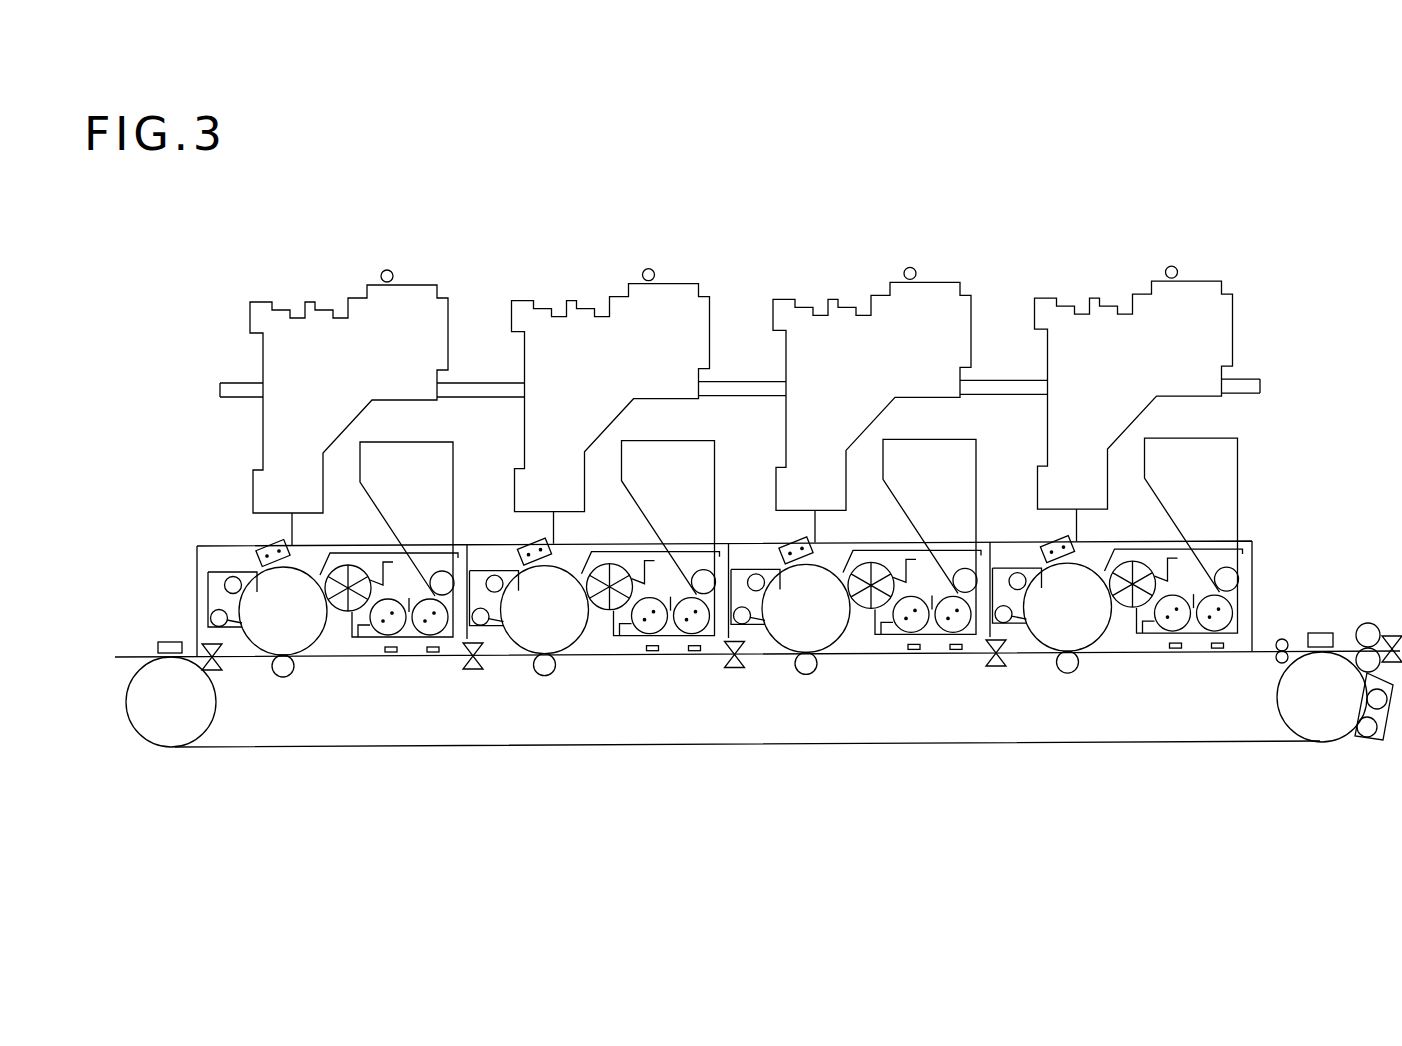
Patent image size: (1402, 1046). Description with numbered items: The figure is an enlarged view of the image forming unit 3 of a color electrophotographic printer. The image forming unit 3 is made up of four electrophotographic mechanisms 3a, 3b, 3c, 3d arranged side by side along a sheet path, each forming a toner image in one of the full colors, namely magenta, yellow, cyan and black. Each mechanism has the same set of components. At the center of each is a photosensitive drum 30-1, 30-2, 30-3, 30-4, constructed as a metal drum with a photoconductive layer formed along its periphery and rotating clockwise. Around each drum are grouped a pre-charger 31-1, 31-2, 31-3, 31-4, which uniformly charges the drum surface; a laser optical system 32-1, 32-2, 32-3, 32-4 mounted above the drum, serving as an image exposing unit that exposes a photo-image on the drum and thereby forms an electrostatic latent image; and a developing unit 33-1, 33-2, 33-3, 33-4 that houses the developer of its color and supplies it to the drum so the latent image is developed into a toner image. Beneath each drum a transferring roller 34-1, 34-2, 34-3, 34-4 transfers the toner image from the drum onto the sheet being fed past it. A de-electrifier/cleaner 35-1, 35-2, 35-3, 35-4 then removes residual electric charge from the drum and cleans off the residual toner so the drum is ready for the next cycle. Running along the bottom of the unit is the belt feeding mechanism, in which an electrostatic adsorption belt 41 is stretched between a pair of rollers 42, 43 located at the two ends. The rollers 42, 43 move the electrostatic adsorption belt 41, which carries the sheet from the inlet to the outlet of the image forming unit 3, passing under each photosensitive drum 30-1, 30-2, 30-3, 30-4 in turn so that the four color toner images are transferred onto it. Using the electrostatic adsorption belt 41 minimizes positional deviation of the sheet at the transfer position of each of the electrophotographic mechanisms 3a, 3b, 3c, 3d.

The image forming unit 3 is at (956, 205).
The electrophotographic mechanism 3a is at (1212, 258).
The electrophotographic mechanism 3b is at (783, 262).
The electrophotographic mechanism 3c is at (606, 262).
The electrophotographic mechanism 3d is at (430, 262).
The photosensitive drum 30-1 is at (1105, 638).
The photosensitive drum 30-2 is at (845, 640).
The photosensitive drum 30-3 is at (583, 642).
The photosensitive drum 30-4 is at (322, 640).
The pre-charger 31-1 is at (1060, 543).
The pre-charger 31-2 is at (795, 543).
The pre-charger 31-3 is at (533, 543).
The pre-charger 31-4 is at (258, 543).
The laser optical system 32-1 is at (1234, 300).
The laser optical system 32-2 is at (972, 292).
The laser optical system 32-3 is at (706, 292).
The laser optical system 32-4 is at (443, 292).
The developing unit 33-1 is at (1235, 538).
The developing unit 33-2 is at (910, 439).
The developing unit 33-3 is at (655, 440).
The developing unit 33-4 is at (394, 441).
The transferring roller 34-1 is at (1076, 677).
The transferring roller 34-2 is at (805, 677).
The transferring roller 34-3 is at (551, 677).
The transferring roller 34-4 is at (283, 677).
The de-electrifier/cleaner 35-1 is at (1015, 630).
The de-electrifier/cleaner 35-2 is at (755, 628).
The de-electrifier/cleaner 35-3 is at (493, 628).
The de-electrifier/cleaner 35-4 is at (203, 607).
The electrostatic adsorption belt 41 is at (1055, 748).
The roller 42 is at (1317, 727).
The roller 43 is at (178, 733).